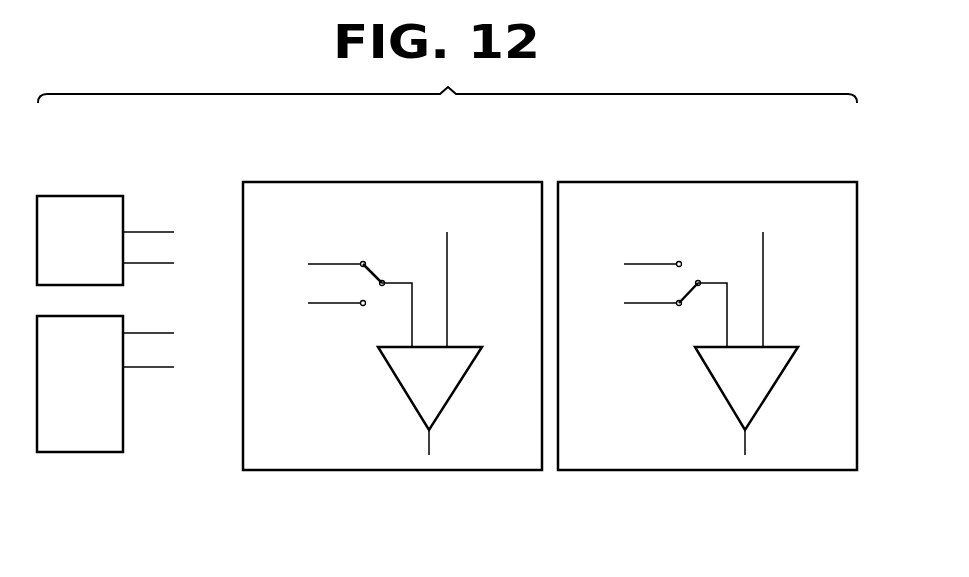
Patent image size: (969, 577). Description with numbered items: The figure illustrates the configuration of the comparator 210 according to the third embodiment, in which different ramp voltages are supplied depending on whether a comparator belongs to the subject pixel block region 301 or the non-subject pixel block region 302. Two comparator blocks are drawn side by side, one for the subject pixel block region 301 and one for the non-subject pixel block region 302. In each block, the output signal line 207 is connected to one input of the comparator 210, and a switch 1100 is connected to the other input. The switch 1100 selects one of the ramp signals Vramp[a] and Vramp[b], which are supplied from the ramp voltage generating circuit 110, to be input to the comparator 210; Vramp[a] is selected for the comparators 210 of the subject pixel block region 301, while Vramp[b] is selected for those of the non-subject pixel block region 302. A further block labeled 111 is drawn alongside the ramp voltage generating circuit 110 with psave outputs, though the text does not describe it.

The control unit 111 is at (81, 196).
The ramp voltage generating circuit 110 is at (83, 452).
The subject pixel block region 301 is at (355, 182).
The non-subject pixel block region 302 is at (670, 182).
The switch 1100 is at (374, 276).
The output signal line 207 is at (448, 243).
The comparator 210 is at (458, 384).